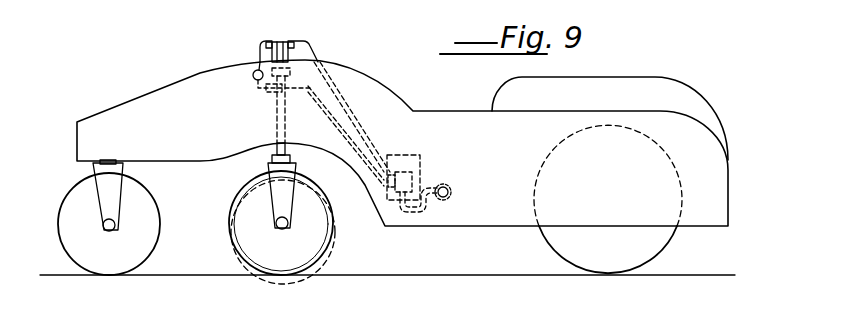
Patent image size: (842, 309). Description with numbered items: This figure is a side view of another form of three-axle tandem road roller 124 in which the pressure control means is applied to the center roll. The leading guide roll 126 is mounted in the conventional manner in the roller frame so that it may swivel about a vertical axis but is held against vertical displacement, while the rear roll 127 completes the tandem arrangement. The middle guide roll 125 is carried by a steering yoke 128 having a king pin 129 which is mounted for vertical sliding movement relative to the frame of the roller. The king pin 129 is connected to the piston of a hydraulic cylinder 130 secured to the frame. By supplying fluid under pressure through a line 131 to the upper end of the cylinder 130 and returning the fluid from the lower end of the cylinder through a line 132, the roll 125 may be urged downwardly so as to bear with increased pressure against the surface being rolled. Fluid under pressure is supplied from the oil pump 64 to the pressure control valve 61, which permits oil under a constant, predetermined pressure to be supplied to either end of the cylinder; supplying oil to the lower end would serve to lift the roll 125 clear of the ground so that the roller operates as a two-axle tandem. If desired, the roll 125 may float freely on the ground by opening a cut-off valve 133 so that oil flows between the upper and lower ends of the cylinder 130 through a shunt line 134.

The pressure control valve 61 is at (415, 177).
The oil pump 64 is at (452, 192).
The three-axle road roller 124 is at (419, 94).
The middle guide roll 125 is at (325, 248).
The leading guide roll 126 is at (113, 270).
The rear wheel 127 is at (648, 250).
The steering yoke 128 is at (284, 195).
The king pin 129 is at (276, 151).
The hydraulic cylinder 130 is at (278, 42).
The line 131 is at (318, 47).
The line 132 is at (337, 121).
The cut-off valve 133 is at (255, 82).
The shunt line 134 is at (259, 44).